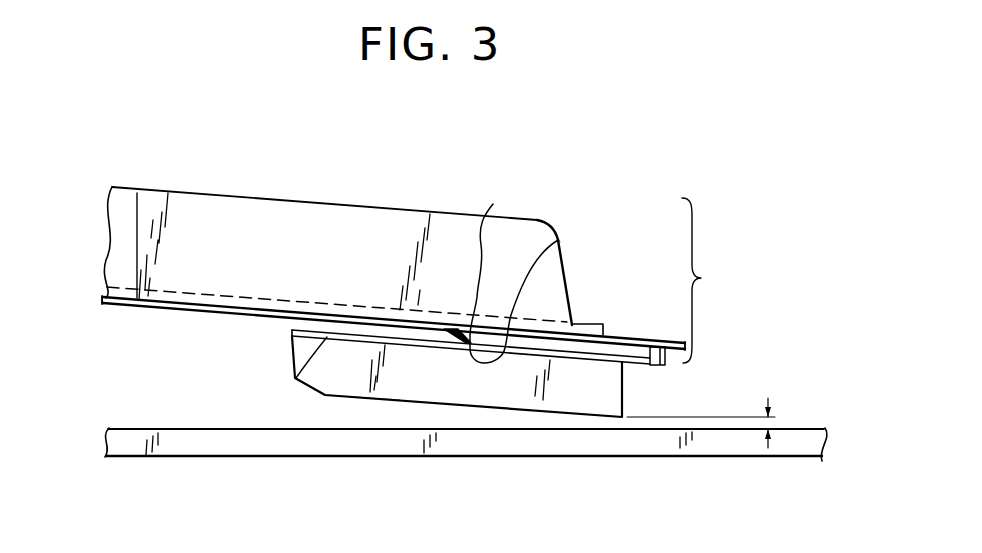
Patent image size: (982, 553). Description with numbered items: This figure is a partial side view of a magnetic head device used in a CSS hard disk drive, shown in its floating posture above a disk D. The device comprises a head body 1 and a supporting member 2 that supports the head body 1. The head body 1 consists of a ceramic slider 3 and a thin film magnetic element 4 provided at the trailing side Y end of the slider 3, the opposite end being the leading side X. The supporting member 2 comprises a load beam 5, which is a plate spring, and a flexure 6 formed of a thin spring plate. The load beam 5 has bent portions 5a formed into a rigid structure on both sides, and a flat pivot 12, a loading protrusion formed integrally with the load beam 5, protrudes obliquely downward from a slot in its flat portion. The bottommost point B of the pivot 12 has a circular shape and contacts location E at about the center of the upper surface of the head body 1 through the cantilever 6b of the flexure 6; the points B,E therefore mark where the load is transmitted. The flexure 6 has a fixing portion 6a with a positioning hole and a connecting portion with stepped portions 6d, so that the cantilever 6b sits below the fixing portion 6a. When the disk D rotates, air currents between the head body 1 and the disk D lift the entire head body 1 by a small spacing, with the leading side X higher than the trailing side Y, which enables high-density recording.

The head body 1 is at (393, 412).
The supporting member 2 is at (702, 280).
The slider 3 is at (348, 398).
The thin film magnetic element 4 is at (630, 405).
The load beam 5 is at (419, 202).
The bent portions 5a is at (560, 284).
The flexure 6 is at (159, 322).
The fixing portion 6a is at (129, 299).
The cantilever 6b is at (297, 378).
The stepped portions 6d is at (655, 346).
The pivot 12 is at (501, 271).
The bottommost point and contact location B,E is at (560, 238).
The disk D is at (460, 451).
The leading side X is at (274, 362).
The trailing side Y is at (641, 385).